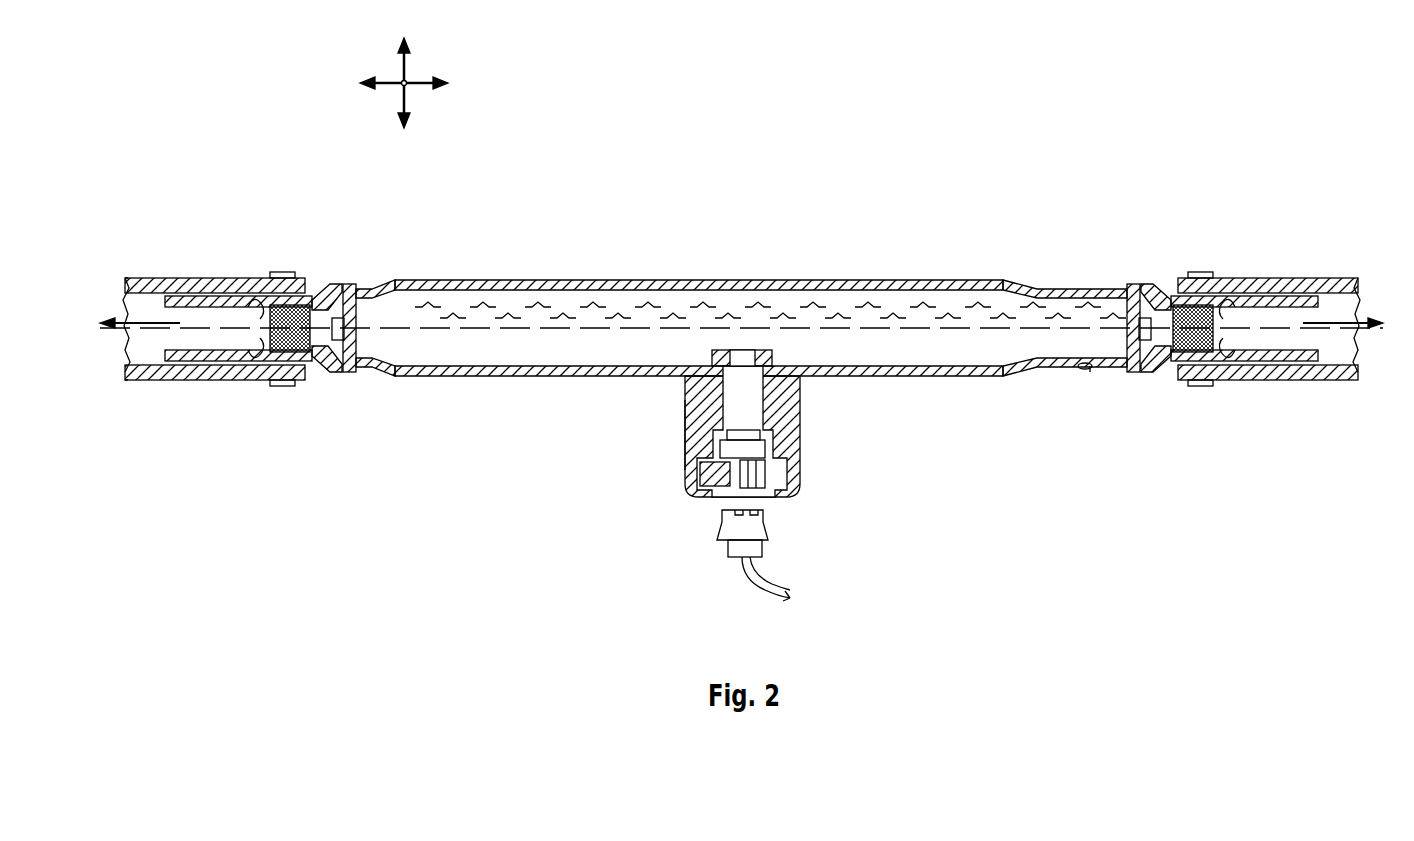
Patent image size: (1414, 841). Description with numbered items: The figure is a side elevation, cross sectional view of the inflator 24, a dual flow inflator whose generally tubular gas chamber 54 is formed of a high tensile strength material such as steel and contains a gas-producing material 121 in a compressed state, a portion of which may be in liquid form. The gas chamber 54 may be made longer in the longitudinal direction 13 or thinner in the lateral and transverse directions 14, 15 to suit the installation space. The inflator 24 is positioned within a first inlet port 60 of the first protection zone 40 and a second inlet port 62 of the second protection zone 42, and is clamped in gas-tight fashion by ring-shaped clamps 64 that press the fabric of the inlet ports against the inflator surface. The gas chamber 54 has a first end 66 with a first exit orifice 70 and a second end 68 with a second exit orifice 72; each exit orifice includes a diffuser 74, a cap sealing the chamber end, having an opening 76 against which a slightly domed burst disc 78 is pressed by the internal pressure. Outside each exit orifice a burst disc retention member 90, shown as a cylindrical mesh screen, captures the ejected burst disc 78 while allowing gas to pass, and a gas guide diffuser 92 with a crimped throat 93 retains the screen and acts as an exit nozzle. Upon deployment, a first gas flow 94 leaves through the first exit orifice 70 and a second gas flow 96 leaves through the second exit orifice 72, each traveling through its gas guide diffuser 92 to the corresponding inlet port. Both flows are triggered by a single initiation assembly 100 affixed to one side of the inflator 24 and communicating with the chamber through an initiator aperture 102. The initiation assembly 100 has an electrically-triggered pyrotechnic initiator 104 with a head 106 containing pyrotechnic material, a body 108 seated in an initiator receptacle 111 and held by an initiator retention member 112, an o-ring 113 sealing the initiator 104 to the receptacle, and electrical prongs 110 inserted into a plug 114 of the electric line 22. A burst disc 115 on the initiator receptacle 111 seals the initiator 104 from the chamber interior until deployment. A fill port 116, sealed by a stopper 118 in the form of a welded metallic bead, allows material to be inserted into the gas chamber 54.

The longitudinal direction 13 is at (422, 84).
The lateral direction 14 is at (402, 88).
The transverse direction 15 is at (404, 64).
The electric line 22 is at (746, 580).
The inflator 24 is at (739, 267).
The first protection zone 40 is at (1238, 326).
The second protection zone 42 is at (700, 305).
The gas chamber 54 is at (620, 276).
The first inlet port 60 is at (1245, 280).
The second inlet port 62 is at (222, 280).
The ring-shaped clamp 64 is at (283, 386).
The first end 66 is at (1048, 376).
The second end 68 is at (378, 378).
The first exit orifice 70 is at (1065, 333).
The second exit orifice 72 is at (380, 336).
The diffuser 74 is at (350, 285).
The opening 76 is at (328, 365).
The burst disc 78 is at (352, 330).
The burst disc retention member 90 is at (292, 308).
The gas guide diffuser 92 is at (175, 300).
The throat 93 is at (245, 352).
The first gas flow 94 is at (1355, 302).
The second gas flow 96 is at (130, 300).
The initiation assembly 100 is at (746, 467).
The initiator aperture 102 is at (718, 361).
The initiator 104 is at (780, 392).
The head 106 is at (735, 398).
The body 108 is at (772, 442).
The electrical prongs 110 is at (737, 475).
The initiator receptacle 111 is at (686, 432).
The initiator retention member 112 is at (705, 478).
The o-ring 113 is at (768, 423).
The plug 114 is at (716, 532).
The burst disc 115 is at (748, 352).
The fill port 116 is at (1090, 372).
The stopper 118 is at (1083, 368).
The gas-producing material 121 is at (931, 360).